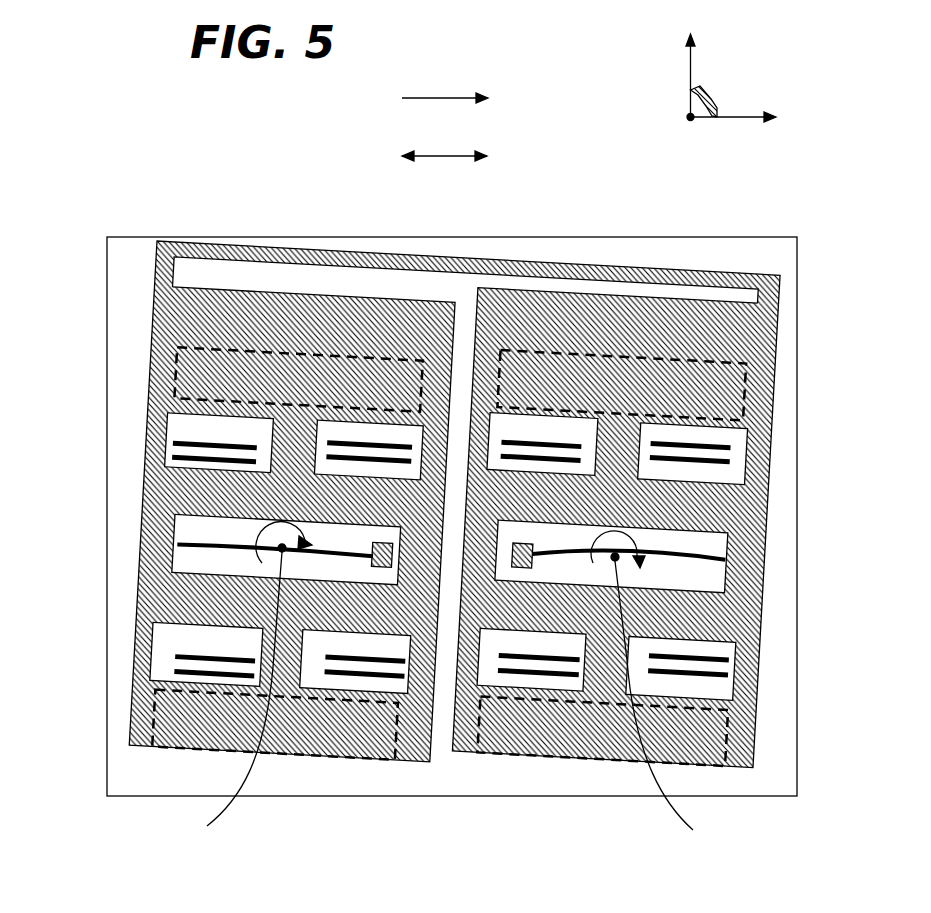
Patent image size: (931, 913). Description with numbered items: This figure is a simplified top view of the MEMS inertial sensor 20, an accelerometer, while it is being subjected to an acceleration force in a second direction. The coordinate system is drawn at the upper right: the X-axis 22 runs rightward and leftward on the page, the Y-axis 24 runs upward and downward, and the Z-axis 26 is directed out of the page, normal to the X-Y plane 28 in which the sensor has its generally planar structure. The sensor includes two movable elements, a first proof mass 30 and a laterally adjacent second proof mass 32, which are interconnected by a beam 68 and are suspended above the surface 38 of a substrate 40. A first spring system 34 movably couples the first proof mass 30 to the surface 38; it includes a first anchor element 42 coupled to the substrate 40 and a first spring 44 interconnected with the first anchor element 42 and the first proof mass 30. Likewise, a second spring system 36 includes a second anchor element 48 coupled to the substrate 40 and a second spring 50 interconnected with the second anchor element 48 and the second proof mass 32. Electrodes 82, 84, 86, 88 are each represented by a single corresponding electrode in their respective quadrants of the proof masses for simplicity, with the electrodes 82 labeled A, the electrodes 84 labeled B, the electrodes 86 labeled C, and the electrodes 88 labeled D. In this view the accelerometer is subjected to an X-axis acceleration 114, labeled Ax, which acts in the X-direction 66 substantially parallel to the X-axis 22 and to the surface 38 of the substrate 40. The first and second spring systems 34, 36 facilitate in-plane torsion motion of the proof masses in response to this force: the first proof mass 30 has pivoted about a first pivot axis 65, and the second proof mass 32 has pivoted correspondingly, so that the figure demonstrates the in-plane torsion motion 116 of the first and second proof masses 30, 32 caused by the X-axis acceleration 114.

The in-plane torsion motion 116 is at (248, 148).
The first proof mass 30 is at (271, 322).
The second proof mass 32 is at (632, 322).
The substrate 40 is at (127, 258).
The beam 68 is at (700, 275).
The surface 38 is at (142, 791).
The MEMS inertial sensor 20 is at (772, 866).
The first spring system 34 is at (234, 549).
The second spring system 36 is at (666, 556).
The first spring 44 is at (275, 549).
The first anchor element 42 is at (383, 548).
The second anchor element 48 is at (522, 555).
The second spring 50 is at (628, 555).
The first pivot axis 65 is at (450, 694).
The electrodes 82 is at (358, 552).
The electrodes 84 is at (362, 500).
The electrodes 86 is at (543, 550).
The electrodes 88 is at (538, 501).
The electrode label A is at (220, 441).
The electrode label B is at (183, 462).
The electrode label C is at (807, 625).
The electrode label D is at (807, 737).
The X-axis acceleration 114 is at (420, 100).
The X-direction 66 is at (420, 157).
The Y-axis 24 is at (690, 51).
The X-axis 22 is at (738, 117).
The Z-axis 26 is at (690, 123).
The X-Y plane 28 is at (711, 100).